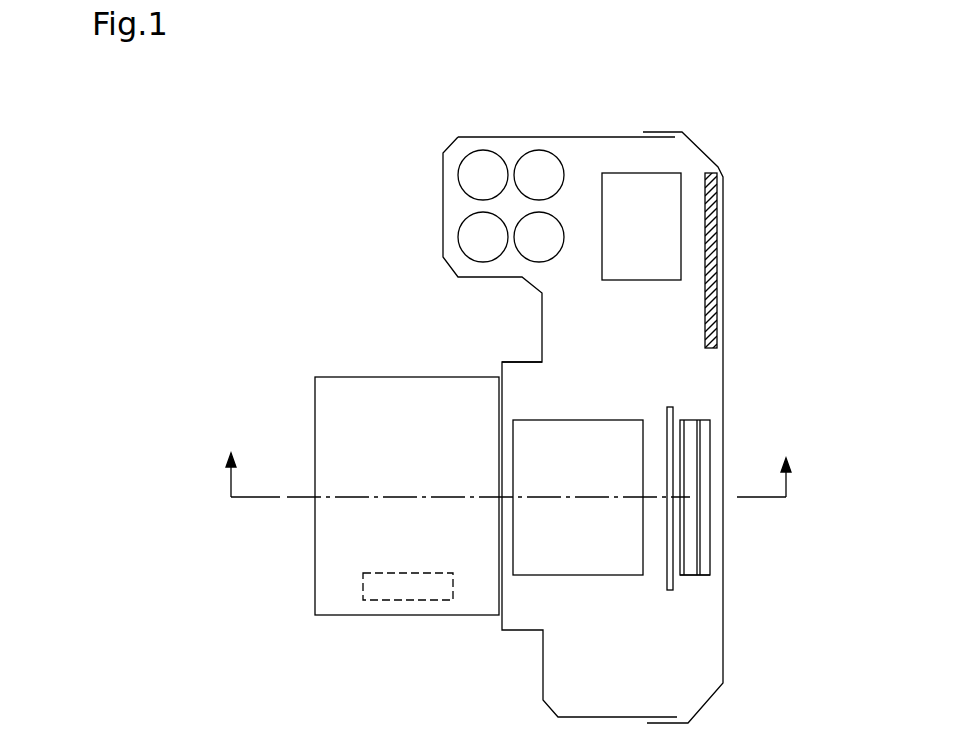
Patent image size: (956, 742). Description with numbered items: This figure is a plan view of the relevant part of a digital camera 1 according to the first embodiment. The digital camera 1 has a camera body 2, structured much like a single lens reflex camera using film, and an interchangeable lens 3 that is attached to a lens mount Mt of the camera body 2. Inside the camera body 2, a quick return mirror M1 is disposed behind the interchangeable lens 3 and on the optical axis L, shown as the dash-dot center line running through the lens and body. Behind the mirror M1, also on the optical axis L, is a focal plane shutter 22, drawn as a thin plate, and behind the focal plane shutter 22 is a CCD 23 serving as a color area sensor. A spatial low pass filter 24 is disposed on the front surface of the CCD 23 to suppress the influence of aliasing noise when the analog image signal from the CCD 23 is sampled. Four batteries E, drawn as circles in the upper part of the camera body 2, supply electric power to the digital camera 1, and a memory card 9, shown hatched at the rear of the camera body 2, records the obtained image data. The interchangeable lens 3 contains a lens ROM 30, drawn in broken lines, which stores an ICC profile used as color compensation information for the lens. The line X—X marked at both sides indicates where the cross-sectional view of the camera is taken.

The digital camera 1 is at (378, 109).
The camera body 2 is at (528, 655).
The interchangeable lens 3 is at (465, 640).
The memory card 9 is at (712, 255).
The focal plane shutter 22 is at (668, 406).
The CCD 23 is at (697, 575).
The spatial low pass filter 24 is at (690, 578).
The lens ROM 30 is at (385, 600).
The batteries E is at (507, 160).
The lens mount Mt is at (488, 358).
The quick return mirror M1 is at (602, 575).
The optical axis L is at (298, 497).
The line X— X is at (507, 458).